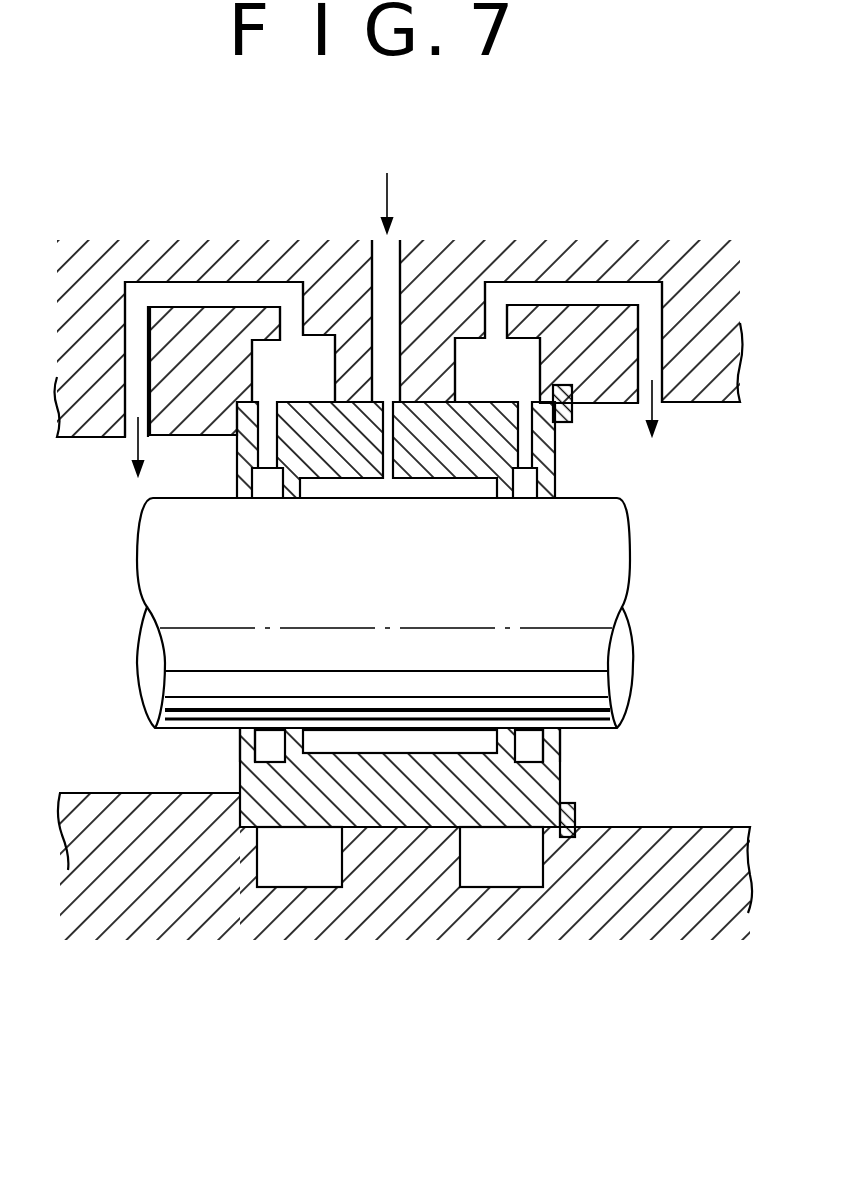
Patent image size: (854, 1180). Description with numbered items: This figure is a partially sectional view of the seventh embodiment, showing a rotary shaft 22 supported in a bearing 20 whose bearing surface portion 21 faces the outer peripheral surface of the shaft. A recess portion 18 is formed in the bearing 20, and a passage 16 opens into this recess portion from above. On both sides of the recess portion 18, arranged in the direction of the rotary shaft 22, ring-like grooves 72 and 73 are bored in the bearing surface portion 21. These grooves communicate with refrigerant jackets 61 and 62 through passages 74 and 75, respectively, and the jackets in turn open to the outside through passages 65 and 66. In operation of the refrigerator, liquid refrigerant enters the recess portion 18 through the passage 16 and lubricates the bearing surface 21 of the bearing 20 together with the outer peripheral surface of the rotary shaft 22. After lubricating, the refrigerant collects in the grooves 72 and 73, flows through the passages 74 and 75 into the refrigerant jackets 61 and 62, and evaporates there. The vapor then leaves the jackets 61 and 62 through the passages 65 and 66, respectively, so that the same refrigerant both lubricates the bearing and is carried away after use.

The passage 16 is at (402, 270).
The recess portion 18 is at (423, 743).
The bearing 20 is at (543, 782).
The bearing surface portion 21 is at (298, 727).
The rotary shaft 22 is at (631, 543).
The refrigerant jacket 61 is at (497, 887).
The refrigerant jacket 62 is at (283, 887).
The passage 65 is at (595, 290).
The passage 66 is at (228, 290).
The ring-like groove 72 is at (530, 750).
The ring-like groove 73 is at (263, 743).
The passage 74 is at (525, 442).
The passage 75 is at (267, 442).